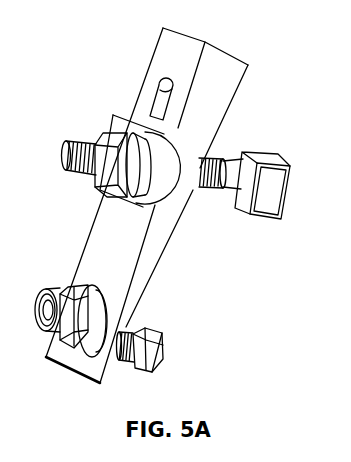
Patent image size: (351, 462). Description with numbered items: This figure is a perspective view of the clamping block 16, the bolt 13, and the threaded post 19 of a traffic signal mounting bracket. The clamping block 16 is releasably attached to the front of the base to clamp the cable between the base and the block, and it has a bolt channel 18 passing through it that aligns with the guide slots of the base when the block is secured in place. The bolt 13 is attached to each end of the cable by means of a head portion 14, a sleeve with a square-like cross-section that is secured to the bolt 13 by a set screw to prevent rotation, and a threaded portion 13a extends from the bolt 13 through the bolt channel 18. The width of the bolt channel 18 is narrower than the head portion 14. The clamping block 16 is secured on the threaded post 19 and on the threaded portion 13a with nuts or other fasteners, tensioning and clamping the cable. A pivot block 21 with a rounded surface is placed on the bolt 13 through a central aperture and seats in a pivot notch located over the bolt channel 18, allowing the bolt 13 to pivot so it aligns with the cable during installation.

The bolt 13 is at (220, 185).
The threaded portion 13a is at (85, 143).
The head portion 14 is at (283, 197).
The clamping block 16 is at (233, 100).
The bolt channel 18 is at (157, 103).
The threaded post 19 is at (45, 298).
The pivot block 21 is at (161, 185).